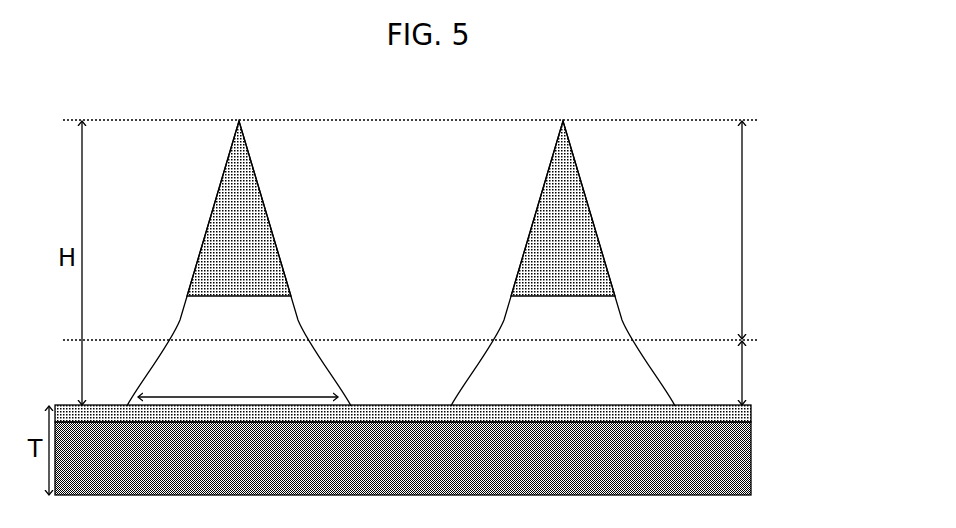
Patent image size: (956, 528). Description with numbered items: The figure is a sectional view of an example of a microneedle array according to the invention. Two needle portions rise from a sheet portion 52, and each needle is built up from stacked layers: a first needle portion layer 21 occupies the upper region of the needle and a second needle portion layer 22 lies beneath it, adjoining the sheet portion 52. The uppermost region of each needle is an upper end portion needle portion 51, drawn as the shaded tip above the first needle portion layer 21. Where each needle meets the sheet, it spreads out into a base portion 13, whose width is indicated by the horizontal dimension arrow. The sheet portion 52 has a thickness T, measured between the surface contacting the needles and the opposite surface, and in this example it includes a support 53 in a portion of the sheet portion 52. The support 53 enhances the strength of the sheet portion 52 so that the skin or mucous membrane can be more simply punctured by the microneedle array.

The base portion 13 is at (238, 381).
The first needle portion layer 21 is at (758, 230).
The second needle portion layer 22 is at (758, 373).
The upper end portion needle portion 51 is at (557, 215).
The sheet portion 52 is at (752, 415).
The support 53 is at (752, 465).